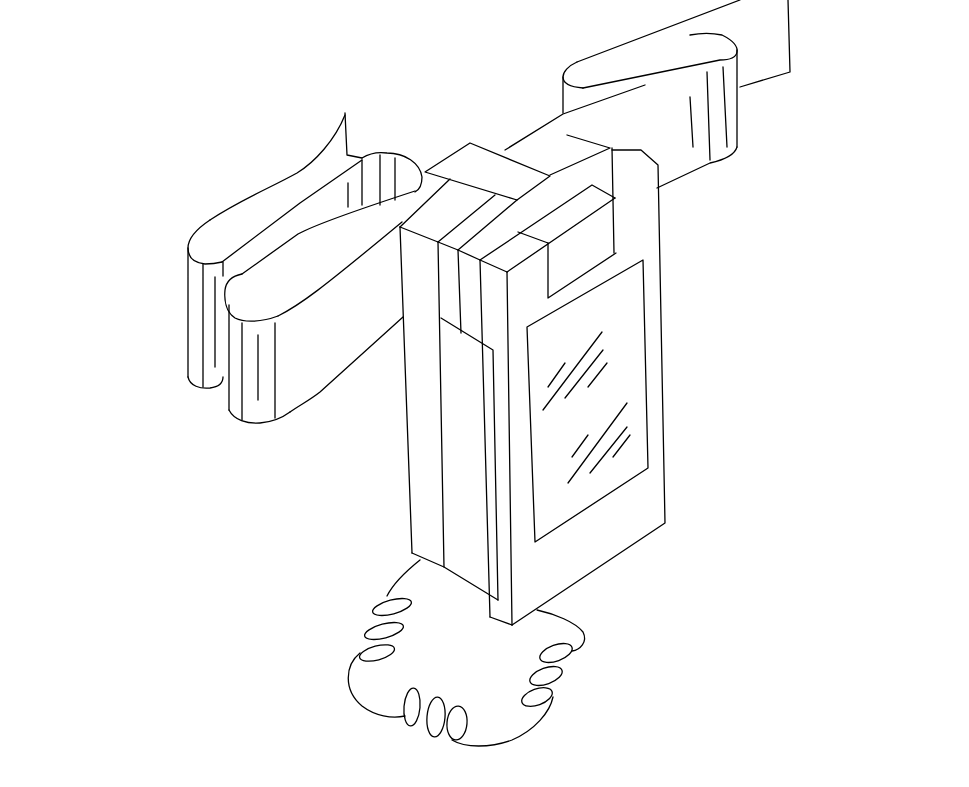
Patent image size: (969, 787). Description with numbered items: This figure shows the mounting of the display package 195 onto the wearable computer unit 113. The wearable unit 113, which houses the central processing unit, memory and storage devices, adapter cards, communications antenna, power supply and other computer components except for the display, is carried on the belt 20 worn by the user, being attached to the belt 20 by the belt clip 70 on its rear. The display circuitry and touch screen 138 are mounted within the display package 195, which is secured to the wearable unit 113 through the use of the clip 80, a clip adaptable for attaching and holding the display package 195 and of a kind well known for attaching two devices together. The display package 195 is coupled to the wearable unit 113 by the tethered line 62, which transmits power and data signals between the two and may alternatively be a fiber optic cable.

The belt 20 is at (188, 302).
The belt clip 70 is at (488, 163).
The wearable unit 113 is at (407, 405).
The clip 80 is at (467, 457).
The touch screen 138 is at (618, 337).
The display package 195 is at (632, 545).
The tethered line 62 is at (566, 672).